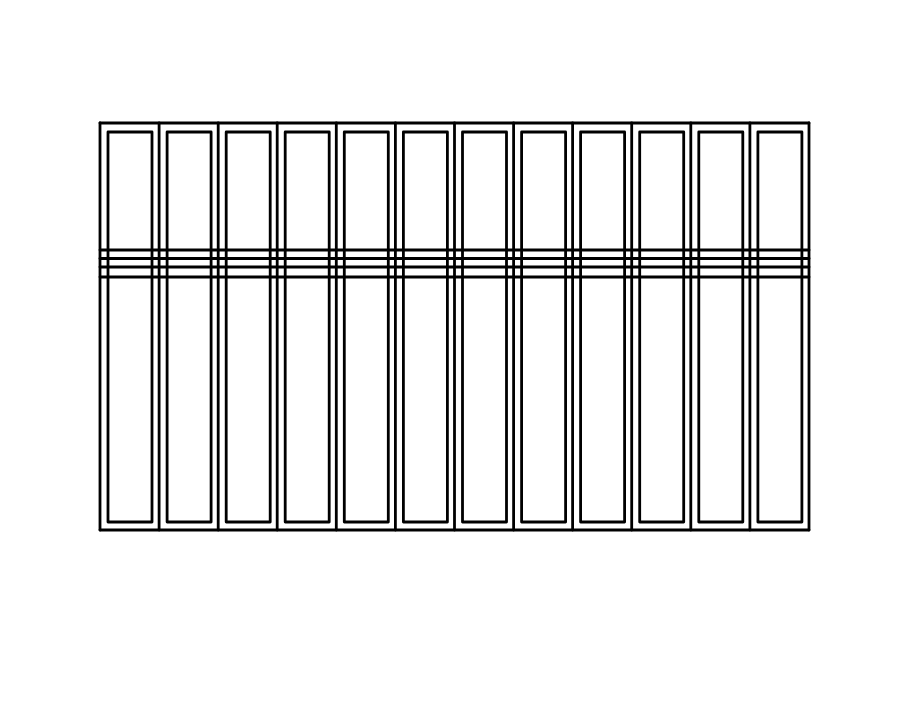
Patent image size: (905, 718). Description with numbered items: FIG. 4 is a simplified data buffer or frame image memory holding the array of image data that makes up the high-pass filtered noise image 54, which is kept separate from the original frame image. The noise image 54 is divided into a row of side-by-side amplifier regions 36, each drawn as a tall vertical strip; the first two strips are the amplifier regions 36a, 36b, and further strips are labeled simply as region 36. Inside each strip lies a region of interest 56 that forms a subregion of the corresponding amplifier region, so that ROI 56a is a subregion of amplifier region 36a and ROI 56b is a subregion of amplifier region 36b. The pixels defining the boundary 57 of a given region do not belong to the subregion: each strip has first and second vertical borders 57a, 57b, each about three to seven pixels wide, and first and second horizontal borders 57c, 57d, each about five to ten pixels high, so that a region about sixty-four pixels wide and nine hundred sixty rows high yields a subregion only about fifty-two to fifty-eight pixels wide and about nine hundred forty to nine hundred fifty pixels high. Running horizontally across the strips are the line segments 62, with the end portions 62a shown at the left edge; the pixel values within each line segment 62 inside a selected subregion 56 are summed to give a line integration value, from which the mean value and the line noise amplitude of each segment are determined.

The noise image 54 is at (458, 56).
The amplifier region 36 is at (600, 110).
The amplifier region 36a is at (133, 542).
The amplifier region 36b is at (192, 542).
The region of interest 56 is at (363, 156).
The region of interest 56a is at (133, 152).
The region of interest 56b is at (185, 157).
The boundary 57 is at (248, 124).
The first vertical border 57a is at (100, 430).
The second vertical border 57b is at (157, 358).
The first horizontal border 57c is at (112, 126).
The second horizontal border 57d is at (117, 525).
The line segment 62 is at (778, 250).
The conductive strip end 62a is at (125, 250).